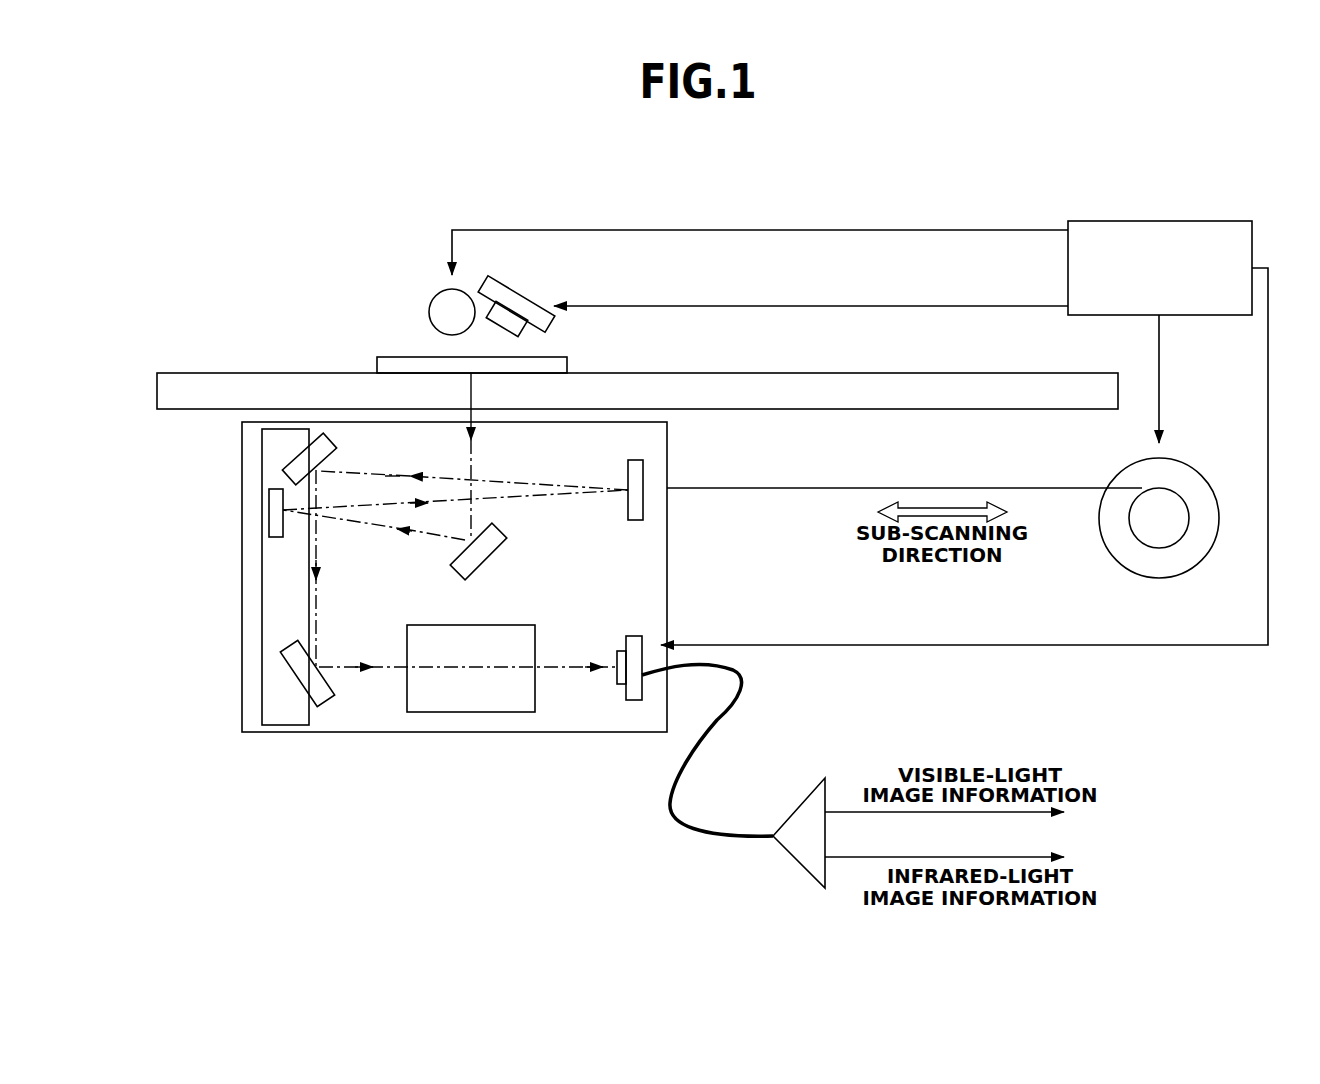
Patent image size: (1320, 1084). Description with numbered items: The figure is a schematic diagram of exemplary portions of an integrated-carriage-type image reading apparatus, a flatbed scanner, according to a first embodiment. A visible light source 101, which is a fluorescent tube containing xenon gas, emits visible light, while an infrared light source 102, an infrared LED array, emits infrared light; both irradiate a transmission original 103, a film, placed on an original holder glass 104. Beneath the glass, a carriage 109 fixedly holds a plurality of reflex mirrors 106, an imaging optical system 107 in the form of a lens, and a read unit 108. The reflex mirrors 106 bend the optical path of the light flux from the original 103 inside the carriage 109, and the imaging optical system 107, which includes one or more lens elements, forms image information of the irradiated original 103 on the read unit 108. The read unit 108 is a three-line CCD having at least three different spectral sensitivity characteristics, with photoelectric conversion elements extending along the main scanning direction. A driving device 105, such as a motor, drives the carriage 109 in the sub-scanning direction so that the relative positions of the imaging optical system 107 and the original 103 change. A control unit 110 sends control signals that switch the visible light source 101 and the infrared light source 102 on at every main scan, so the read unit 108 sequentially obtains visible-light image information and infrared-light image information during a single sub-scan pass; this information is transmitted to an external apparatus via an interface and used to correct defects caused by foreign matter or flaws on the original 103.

The visible light source 101 is at (432, 298).
The infrared light source 102 is at (525, 290).
The transmission original 103 is at (568, 367).
The original holder glass 104 is at (720, 373).
The driving device 105 is at (1195, 470).
The reflex mirrors 106 is at (300, 462).
The imaging optical system 107 is at (475, 625).
The read unit 108 is at (634, 636).
The carriage 109 is at (358, 733).
The control unit 110 is at (1185, 222).